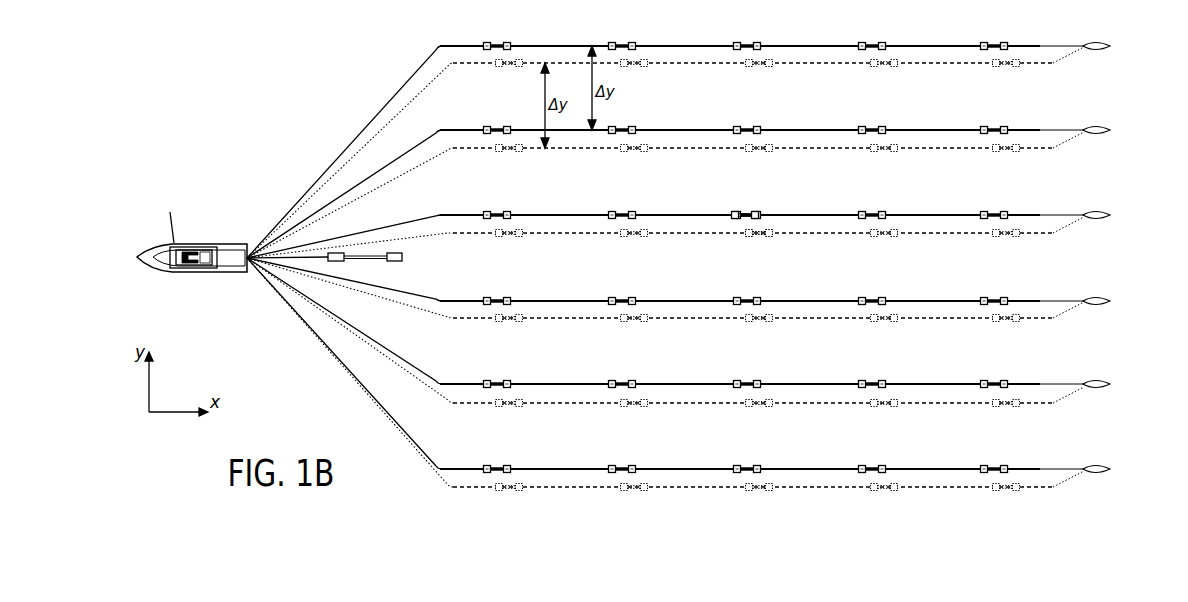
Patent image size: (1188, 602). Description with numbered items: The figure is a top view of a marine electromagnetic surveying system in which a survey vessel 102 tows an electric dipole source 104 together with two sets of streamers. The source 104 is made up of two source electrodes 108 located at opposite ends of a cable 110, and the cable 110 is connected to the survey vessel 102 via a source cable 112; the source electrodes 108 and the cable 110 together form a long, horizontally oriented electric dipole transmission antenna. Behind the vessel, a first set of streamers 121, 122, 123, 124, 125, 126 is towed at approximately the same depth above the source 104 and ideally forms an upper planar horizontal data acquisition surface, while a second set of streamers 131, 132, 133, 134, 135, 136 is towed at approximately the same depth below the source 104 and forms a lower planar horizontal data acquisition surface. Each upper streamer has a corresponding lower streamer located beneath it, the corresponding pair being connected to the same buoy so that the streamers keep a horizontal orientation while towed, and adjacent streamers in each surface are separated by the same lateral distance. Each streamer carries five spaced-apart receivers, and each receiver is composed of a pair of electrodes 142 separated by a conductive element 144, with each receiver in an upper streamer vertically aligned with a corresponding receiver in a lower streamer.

The survey vessel 102 is at (210, 242).
The electric dipole source 104 is at (413, 258).
The source electrodes 108 is at (402, 262).
The cable 110 is at (367, 261).
The source cable 112 is at (298, 259).
The streamer 121 is at (963, 45).
The streamer 122 is at (963, 129).
The streamer 123 is at (963, 213).
The streamer 124 is at (963, 300).
The streamer 125 is at (963, 383).
The streamer 126 is at (963, 468).
The streamer 131 is at (949, 66).
The streamer 132 is at (950, 151).
The streamer 133 is at (950, 236).
The streamer 134 is at (950, 321).
The streamer 135 is at (950, 406).
The streamer 136 is at (950, 490).
The electrodes 142 is at (732, 212).
The conductive element 144 is at (745, 212).